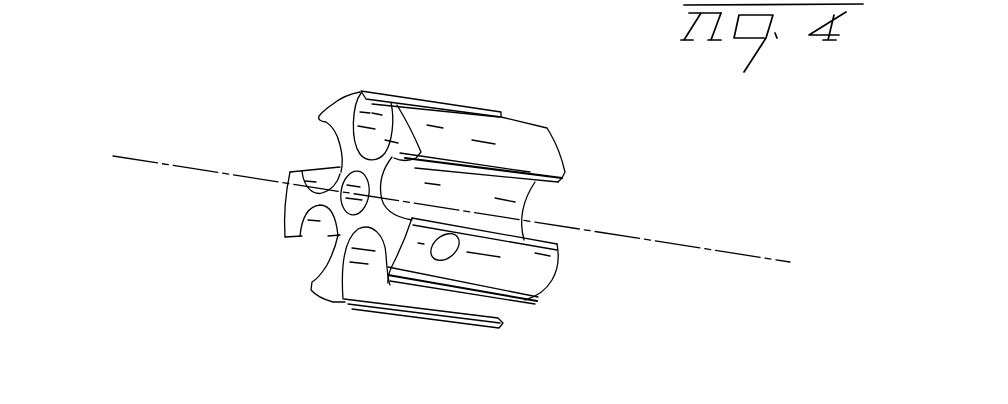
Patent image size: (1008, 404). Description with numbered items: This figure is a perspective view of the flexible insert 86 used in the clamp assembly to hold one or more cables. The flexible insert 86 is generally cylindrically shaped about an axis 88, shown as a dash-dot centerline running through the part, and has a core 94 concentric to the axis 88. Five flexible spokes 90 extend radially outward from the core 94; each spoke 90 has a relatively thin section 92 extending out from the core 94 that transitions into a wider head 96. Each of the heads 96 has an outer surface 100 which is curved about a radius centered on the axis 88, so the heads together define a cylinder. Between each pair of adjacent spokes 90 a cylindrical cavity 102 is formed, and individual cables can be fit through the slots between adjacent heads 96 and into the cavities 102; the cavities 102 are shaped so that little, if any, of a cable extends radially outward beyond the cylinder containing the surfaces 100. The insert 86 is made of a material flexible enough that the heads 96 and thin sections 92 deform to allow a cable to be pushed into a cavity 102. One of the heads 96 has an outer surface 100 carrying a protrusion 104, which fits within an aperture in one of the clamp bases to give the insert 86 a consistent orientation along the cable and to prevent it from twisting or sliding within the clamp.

The flexible insert 86 is at (518, 97).
The axis 88 is at (727, 248).
The flexible spokes 90 is at (328, 140).
The thin section 92 is at (416, 146).
The core 94 is at (343, 210).
The head 96 is at (407, 128).
The outer surface 100 is at (545, 137).
The cylindrical cavities 102 is at (368, 136).
The protrusion 104 is at (455, 258).